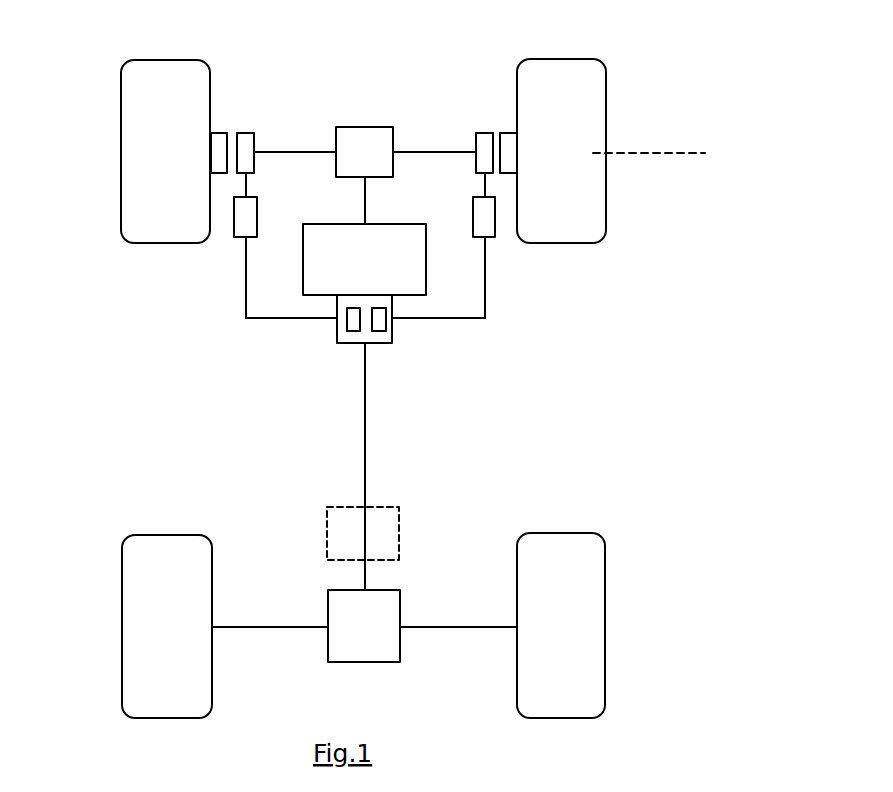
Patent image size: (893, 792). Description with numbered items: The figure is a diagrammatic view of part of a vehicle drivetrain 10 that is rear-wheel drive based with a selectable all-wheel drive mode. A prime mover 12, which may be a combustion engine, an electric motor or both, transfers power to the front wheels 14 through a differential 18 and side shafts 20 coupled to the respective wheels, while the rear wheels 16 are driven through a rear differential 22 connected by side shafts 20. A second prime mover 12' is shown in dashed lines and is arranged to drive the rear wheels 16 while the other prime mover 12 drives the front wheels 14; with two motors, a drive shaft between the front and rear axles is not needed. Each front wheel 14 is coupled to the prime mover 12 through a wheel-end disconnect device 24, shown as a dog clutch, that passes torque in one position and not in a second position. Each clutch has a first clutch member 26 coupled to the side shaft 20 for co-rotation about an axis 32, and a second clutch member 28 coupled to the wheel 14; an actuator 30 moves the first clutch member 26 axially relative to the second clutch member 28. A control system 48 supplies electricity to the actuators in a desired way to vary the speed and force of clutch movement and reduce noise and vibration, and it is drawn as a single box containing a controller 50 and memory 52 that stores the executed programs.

The vehicle drivetrain 10 is at (670, 55).
The prime mover 12 is at (383, 236).
The second prime mover 12' is at (405, 515).
The front wheel 14 is at (130, 195).
The rear wheel 16 is at (128, 656).
The differential 18 is at (368, 137).
The side shaft 20 is at (296, 150).
The rear differential 22 is at (385, 603).
The disconnect device 24 is at (236, 102).
The first clutch member 26 is at (250, 160).
The second clutch member 28 is at (218, 160).
The actuator 30 is at (242, 230).
The axis of rotation 32 is at (672, 153).
The control system 48 is at (340, 358).
The controller 50 is at (350, 324).
The memory 52 is at (380, 325).